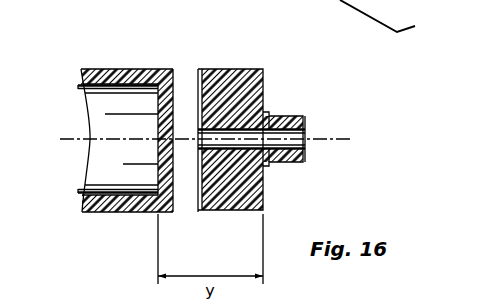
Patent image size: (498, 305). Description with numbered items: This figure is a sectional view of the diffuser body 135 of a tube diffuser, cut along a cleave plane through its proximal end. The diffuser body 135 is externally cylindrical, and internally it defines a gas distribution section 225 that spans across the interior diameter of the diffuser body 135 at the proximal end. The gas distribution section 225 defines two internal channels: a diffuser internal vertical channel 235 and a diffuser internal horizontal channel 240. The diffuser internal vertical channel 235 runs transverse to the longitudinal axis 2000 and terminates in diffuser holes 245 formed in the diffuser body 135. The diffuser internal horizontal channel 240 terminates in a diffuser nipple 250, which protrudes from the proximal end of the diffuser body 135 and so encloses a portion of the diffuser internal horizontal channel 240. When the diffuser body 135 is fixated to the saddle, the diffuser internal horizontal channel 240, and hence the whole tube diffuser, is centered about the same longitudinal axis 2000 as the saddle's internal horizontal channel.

The diffuser body 135 is at (108, 62).
The diffuser holes 245 is at (188, 96).
The diffuser internal vertical channel 235 is at (198, 70).
The gas distribution section 225 is at (278, 104).
The diffuser nipple 250 is at (310, 111).
The diffuser internal horizontal channel 240 is at (303, 140).
The longitudinal axis 2000 is at (349, 138).